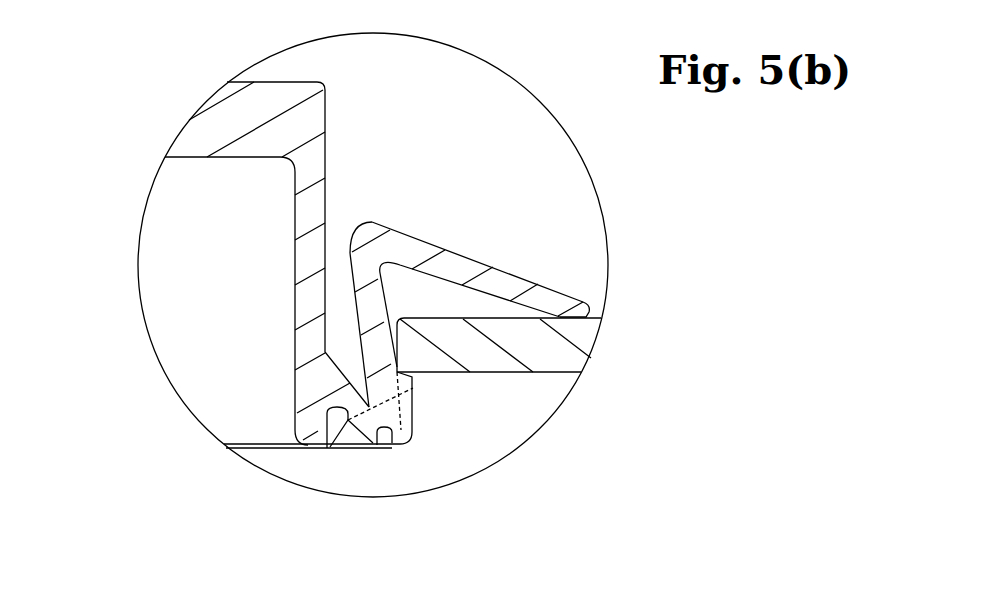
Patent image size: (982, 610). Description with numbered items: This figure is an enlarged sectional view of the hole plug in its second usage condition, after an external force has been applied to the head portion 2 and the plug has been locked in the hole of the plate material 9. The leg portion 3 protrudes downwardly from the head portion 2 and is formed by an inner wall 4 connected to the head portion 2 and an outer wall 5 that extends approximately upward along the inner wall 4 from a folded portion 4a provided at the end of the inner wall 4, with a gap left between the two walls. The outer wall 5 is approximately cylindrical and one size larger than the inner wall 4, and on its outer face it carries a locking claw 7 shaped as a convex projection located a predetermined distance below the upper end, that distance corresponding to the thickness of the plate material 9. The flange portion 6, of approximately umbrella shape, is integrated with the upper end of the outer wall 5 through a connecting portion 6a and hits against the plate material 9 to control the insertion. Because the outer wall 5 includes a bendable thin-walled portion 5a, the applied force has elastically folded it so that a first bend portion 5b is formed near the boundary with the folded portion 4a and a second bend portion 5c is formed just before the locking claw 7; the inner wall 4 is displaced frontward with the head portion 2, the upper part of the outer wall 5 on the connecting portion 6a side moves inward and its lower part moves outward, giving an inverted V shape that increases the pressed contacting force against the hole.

The head portion 2 is at (227, 92).
The leg portion 3 is at (92, 283).
The inner wall 4 is at (305, 207).
The folded portion 4a is at (297, 448).
The outer wall 5 is at (363, 305).
The thin-walled portion 5a is at (420, 527).
The first bend portion 5b is at (329, 447).
The second bend portion 5c is at (390, 448).
The flange portion 6 is at (510, 267).
The connecting portion 6a is at (370, 222).
The locking claw 7 is at (413, 385).
The plate material 9 is at (570, 352).